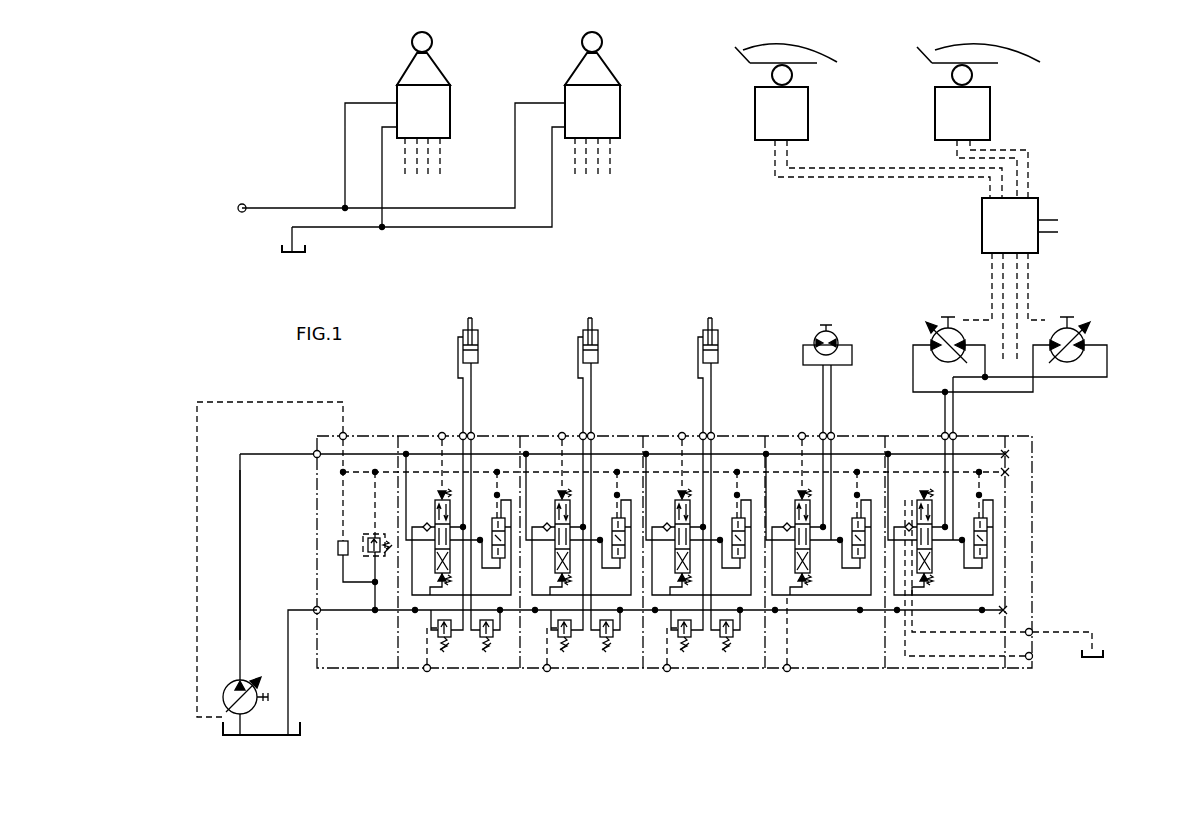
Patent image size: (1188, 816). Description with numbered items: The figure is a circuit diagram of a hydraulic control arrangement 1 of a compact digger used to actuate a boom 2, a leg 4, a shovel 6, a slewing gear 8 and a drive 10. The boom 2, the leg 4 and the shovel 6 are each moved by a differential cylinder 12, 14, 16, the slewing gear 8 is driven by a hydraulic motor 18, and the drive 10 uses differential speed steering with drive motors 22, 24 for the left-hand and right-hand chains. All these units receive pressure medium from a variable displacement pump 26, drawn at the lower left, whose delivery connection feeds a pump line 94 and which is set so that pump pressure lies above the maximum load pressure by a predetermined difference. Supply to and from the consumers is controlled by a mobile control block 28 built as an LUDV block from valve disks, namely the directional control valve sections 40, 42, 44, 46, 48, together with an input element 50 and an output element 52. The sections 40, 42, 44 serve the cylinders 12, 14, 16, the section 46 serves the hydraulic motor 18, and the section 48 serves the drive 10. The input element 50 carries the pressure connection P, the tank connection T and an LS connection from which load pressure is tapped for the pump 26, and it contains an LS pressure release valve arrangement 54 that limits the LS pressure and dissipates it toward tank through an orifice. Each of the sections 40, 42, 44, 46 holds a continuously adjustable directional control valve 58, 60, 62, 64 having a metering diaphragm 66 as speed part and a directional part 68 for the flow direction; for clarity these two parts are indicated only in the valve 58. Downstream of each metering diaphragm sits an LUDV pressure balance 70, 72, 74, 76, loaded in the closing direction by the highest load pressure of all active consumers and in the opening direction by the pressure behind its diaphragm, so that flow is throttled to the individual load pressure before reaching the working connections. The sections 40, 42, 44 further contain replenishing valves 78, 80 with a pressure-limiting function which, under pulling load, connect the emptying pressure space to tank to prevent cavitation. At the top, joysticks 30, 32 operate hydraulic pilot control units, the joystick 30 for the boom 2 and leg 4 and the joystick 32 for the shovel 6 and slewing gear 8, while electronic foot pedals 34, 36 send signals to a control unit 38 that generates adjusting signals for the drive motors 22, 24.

The hydraulic control arrangement 1 is at (260, 366).
The boom 2 is at (467, 364).
The leg 4 is at (595, 364).
The shovel 6 is at (715, 364).
The slewing gear 8 is at (836, 364).
The drive 10 is at (1014, 364).
The differential cylinder 12 is at (479, 358).
The differential cylinder 14 is at (599, 358).
The differential cylinder 16 is at (719, 358).
The hydraulic motor 18 is at (853, 357).
The drive motor 22 is at (943, 326).
The drive motor 24 is at (1074, 326).
The variable displacement pump 26 is at (230, 686).
The mobile control block 28 is at (1040, 470).
The joystick 30 is at (452, 86).
The joystick 32 is at (622, 86).
The electronic foot pedal 34 is at (800, 92).
The electronic foot pedal 36 is at (994, 92).
The control unit 38 is at (1030, 207).
The directional control valve section 40 is at (467, 551).
The directional control valve section 42 is at (578, 551).
The directional control valve section 44 is at (698, 551).
The directional control valve section 46 is at (819, 551).
The directional control valve section 48 is at (922, 660).
The input element 50 is at (352, 577).
The output element 52 is at (1013, 662).
The LS pressure release valve arrangement 54 is at (355, 538).
The directional control valve 58 is at (431, 496).
The directional control valve 60 is at (551, 496).
The directional control valve 62 is at (671, 496).
The directional control valve 64 is at (791, 496).
The metering diaphragm 66 is at (430, 571).
The directional part 68 is at (430, 558).
The LUDV pressure balance 70 is at (497, 513).
The LUDV pressure balance 72 is at (617, 513).
The LUDV pressure balance 74 is at (737, 513).
The LUDV pressure balance 76 is at (857, 513).
The replenishing valve 78 is at (445, 654).
The replenishing valve 80 is at (492, 654).
The pump line 94 is at (241, 497).